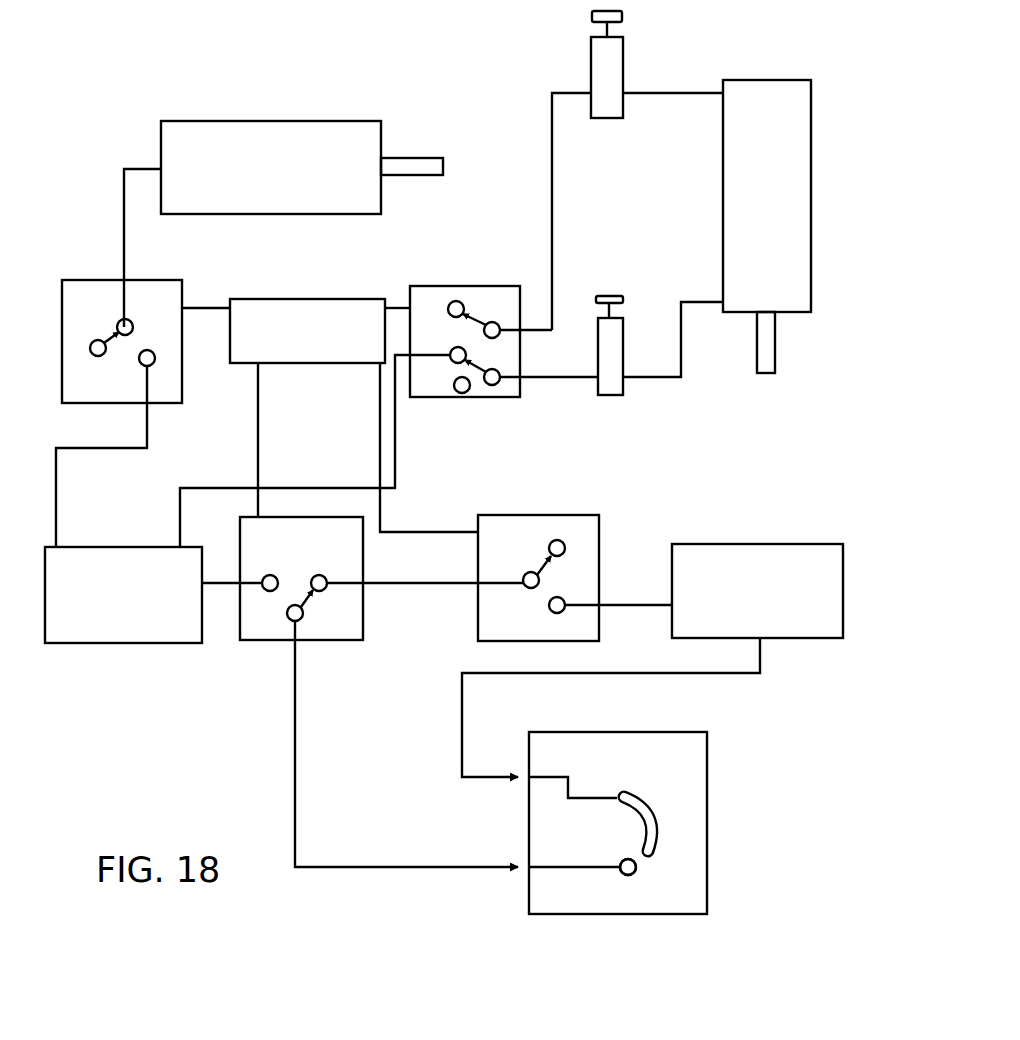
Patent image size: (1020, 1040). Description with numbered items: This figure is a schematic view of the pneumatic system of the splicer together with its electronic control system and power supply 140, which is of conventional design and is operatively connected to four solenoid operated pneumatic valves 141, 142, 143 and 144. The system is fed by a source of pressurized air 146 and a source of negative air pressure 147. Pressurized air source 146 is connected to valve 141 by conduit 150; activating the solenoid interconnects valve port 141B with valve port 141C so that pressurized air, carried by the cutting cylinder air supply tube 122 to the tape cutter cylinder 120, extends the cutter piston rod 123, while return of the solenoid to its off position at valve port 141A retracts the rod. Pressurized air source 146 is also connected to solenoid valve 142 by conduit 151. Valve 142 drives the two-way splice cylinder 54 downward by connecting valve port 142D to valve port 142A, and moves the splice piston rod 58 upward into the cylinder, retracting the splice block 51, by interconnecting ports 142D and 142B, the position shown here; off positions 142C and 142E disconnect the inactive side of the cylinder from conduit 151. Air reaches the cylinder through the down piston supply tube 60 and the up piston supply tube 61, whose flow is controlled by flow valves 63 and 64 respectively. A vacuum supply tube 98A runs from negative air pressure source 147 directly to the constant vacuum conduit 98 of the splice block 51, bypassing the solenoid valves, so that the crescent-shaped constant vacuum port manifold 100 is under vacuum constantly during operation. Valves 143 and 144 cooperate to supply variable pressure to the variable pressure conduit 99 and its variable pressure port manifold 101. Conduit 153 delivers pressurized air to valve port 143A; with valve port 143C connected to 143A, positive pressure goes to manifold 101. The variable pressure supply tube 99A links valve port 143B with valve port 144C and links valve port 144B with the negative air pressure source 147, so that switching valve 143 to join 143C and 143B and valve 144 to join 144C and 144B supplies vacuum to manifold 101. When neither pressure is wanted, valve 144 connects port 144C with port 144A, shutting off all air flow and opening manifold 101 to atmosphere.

The tape cutter cylinder 120 is at (200, 131).
The cutter piston rod 123 is at (410, 163).
The cutting cylinder air supply tube 122 is at (124, 263).
The solenoid operated pneumatic valve 141 is at (150, 292).
The valve port 141A is at (104, 355).
The valve port 141B is at (118, 321).
The valve port 141C is at (154, 360).
The electronic control system and power supply 140 is at (338, 299).
The solenoid operated pneumatic valve 142 is at (420, 290).
The valve port 142A is at (545, 272).
The valve port 142B is at (493, 386).
The valve off position 142C is at (478, 270).
The valve port 142D is at (465, 335).
The valve off position 142E is at (461, 393).
The flow valve 63 is at (593, 62).
The down piston supply tube 60 is at (658, 93).
The splice cylinder 54 is at (722, 135).
The splice piston rod 58 is at (775, 352).
The up piston supply tube 61 is at (712, 343).
The flow valve 64 is at (622, 384).
The conduit 150 is at (56, 500).
The conduit 151 is at (232, 462).
The conduit 153 is at (226, 583).
The source of pressurized air 146 is at (138, 643).
The solenoid operated pneumatic valve 143 is at (268, 641).
The valve port 143A is at (272, 575).
The valve port 143B is at (311, 580).
The valve port 143C is at (323, 621).
The variable pressure supply tube 99A is at (440, 565).
The solenoid operated pneumatic valve 144 is at (478, 610).
The valve port 144A is at (555, 540).
The valve port 144B is at (558, 613).
The valve port 144C is at (527, 572).
The source of negative air pressure 147 is at (695, 544).
The vacuum supply tube 98A is at (462, 755).
The splice block 51 is at (652, 733).
The constant vacuum conduit 98 is at (560, 777).
The constant vacuum port manifold 100 is at (662, 830).
The variable pressure conduit 99 is at (572, 868).
The variable pressure port manifold 101 is at (633, 874).